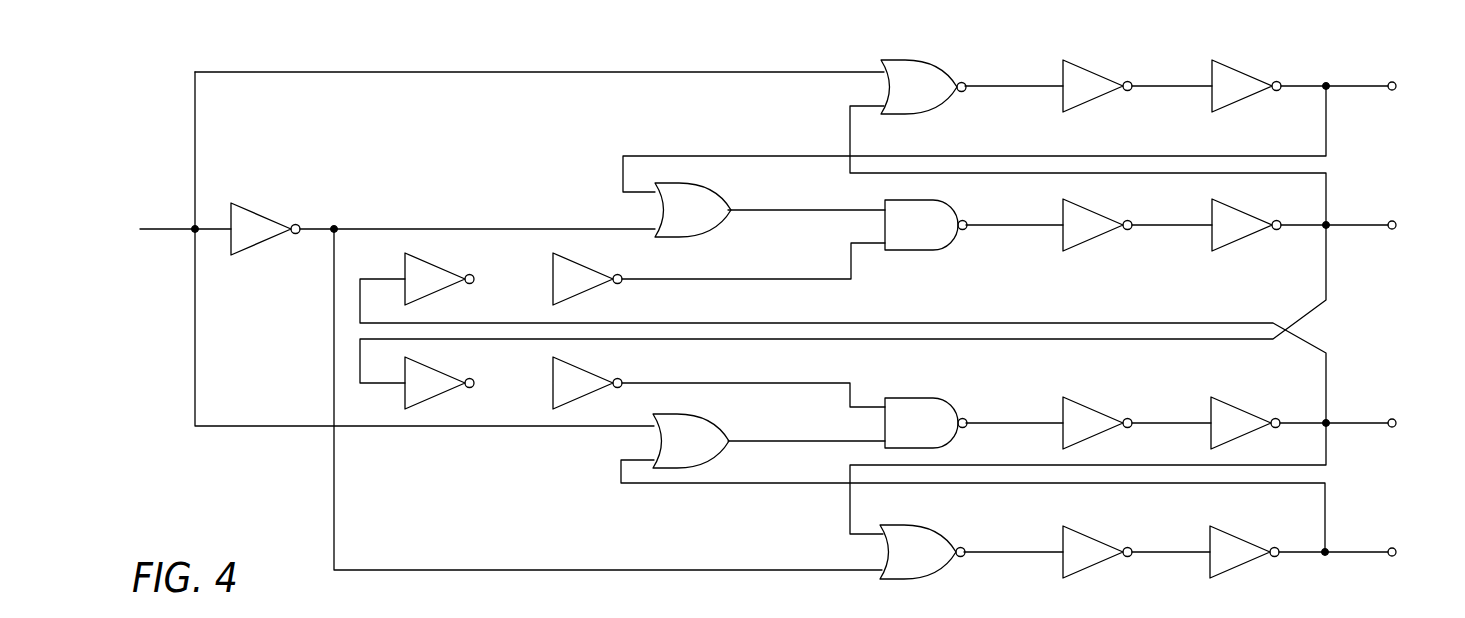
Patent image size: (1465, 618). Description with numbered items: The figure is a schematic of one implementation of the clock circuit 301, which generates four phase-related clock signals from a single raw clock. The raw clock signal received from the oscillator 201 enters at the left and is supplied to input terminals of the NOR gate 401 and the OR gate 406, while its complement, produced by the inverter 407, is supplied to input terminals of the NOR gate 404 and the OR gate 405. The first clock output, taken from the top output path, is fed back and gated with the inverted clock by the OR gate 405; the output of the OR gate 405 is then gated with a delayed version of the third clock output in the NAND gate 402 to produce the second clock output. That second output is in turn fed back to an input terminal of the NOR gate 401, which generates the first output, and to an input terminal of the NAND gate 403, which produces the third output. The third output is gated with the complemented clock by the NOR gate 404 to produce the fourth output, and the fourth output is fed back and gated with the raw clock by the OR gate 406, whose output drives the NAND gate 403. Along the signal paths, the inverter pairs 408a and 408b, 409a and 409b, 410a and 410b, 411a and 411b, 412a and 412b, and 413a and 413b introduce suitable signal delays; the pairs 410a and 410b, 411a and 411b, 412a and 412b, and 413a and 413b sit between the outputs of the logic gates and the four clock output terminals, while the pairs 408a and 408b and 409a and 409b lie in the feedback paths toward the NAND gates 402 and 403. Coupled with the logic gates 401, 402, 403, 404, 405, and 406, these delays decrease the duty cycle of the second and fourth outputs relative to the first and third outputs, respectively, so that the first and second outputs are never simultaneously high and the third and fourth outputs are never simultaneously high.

The oscillator 201 is at (153, 228).
The clock circuit 301 is at (855, 44).
The NOR gate 401 is at (935, 72).
The NAND gate 402 is at (933, 242).
The NAND gate 403 is at (935, 402).
The NOR gate 404 is at (935, 536).
The OR gate 405 is at (712, 196).
The OR gate 406 is at (712, 426).
The inverter 407 is at (255, 240).
The inverter 408a is at (442, 290).
The inverter 408b is at (590, 290).
The inverter 409a is at (442, 373).
The inverter 409b is at (590, 373).
The inverter 410a is at (1088, 73).
The inverter 410b is at (1237, 73).
The inverter 411a is at (1088, 250).
The inverter 411b is at (1237, 250).
The inverter 412a is at (1085, 409).
The inverter 412b is at (1233, 409).
The inverter 413a is at (1085, 538).
The inverter 413b is at (1232, 538).